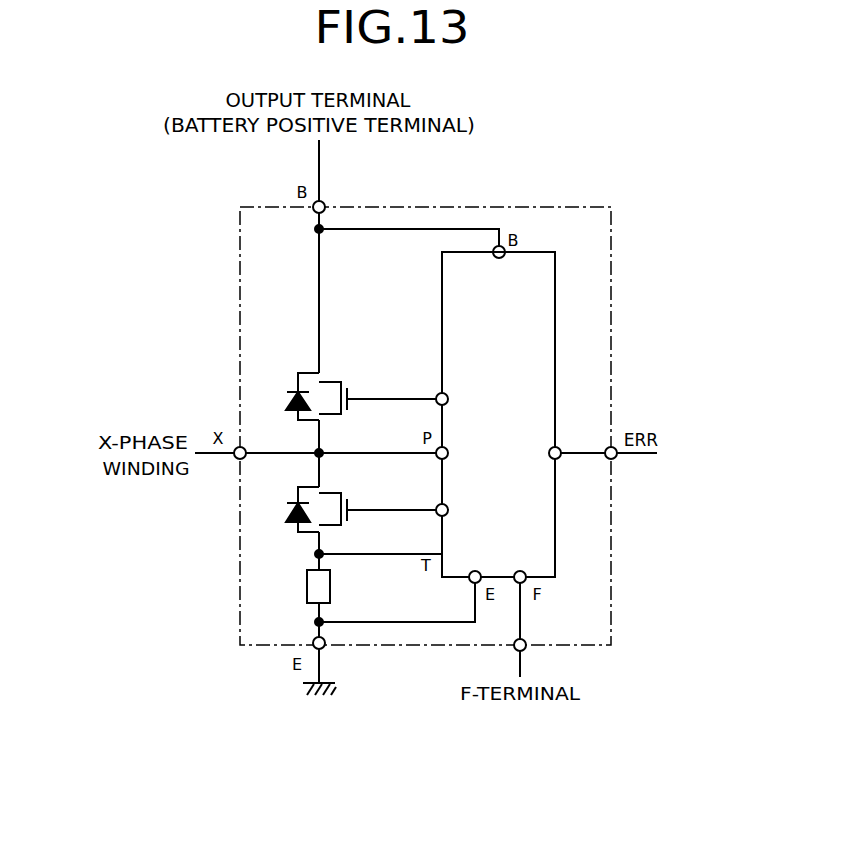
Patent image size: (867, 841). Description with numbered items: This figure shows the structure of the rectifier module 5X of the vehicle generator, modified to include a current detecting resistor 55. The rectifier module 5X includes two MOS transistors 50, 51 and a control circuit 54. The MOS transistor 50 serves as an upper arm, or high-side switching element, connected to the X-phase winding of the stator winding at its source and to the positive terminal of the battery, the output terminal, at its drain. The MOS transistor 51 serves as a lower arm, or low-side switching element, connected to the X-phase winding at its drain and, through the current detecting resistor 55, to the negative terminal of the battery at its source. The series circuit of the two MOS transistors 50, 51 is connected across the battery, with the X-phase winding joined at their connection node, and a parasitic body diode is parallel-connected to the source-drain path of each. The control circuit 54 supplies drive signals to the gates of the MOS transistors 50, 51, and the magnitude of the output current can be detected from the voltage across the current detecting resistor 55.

The rectifier module 5X is at (600, 207).
The control circuit 54 is at (546, 252).
The MOS transistor 50 is at (298, 373).
The MOS transistor 51 is at (298, 532).
The current detecting resistor 55 is at (305, 587).